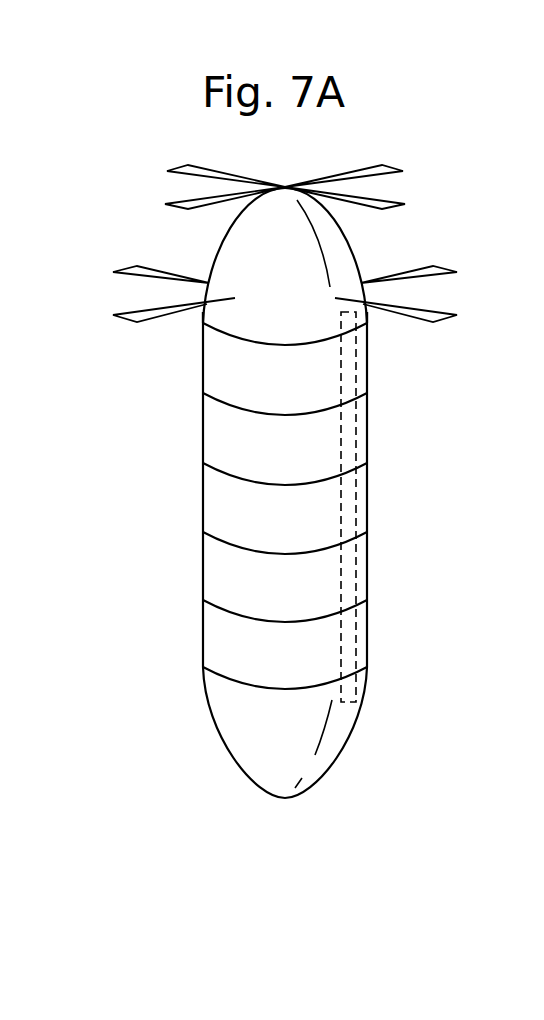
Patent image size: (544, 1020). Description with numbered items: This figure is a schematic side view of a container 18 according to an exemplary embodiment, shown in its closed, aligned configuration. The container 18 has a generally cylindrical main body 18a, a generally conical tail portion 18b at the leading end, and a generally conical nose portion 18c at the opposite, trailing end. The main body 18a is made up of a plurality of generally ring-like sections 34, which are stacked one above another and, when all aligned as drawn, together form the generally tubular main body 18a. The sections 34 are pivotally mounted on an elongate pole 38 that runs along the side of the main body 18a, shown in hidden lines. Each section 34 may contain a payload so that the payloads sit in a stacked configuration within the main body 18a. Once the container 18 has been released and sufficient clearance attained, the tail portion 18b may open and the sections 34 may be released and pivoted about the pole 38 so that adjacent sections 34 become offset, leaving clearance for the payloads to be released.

The container 18 is at (272, 481).
The main body 18a is at (363, 565).
The tail portion 18b is at (262, 742).
The nose portion 18c is at (242, 258).
The ring-like sections 34 is at (227, 378).
The elongate pole 38 is at (357, 358).